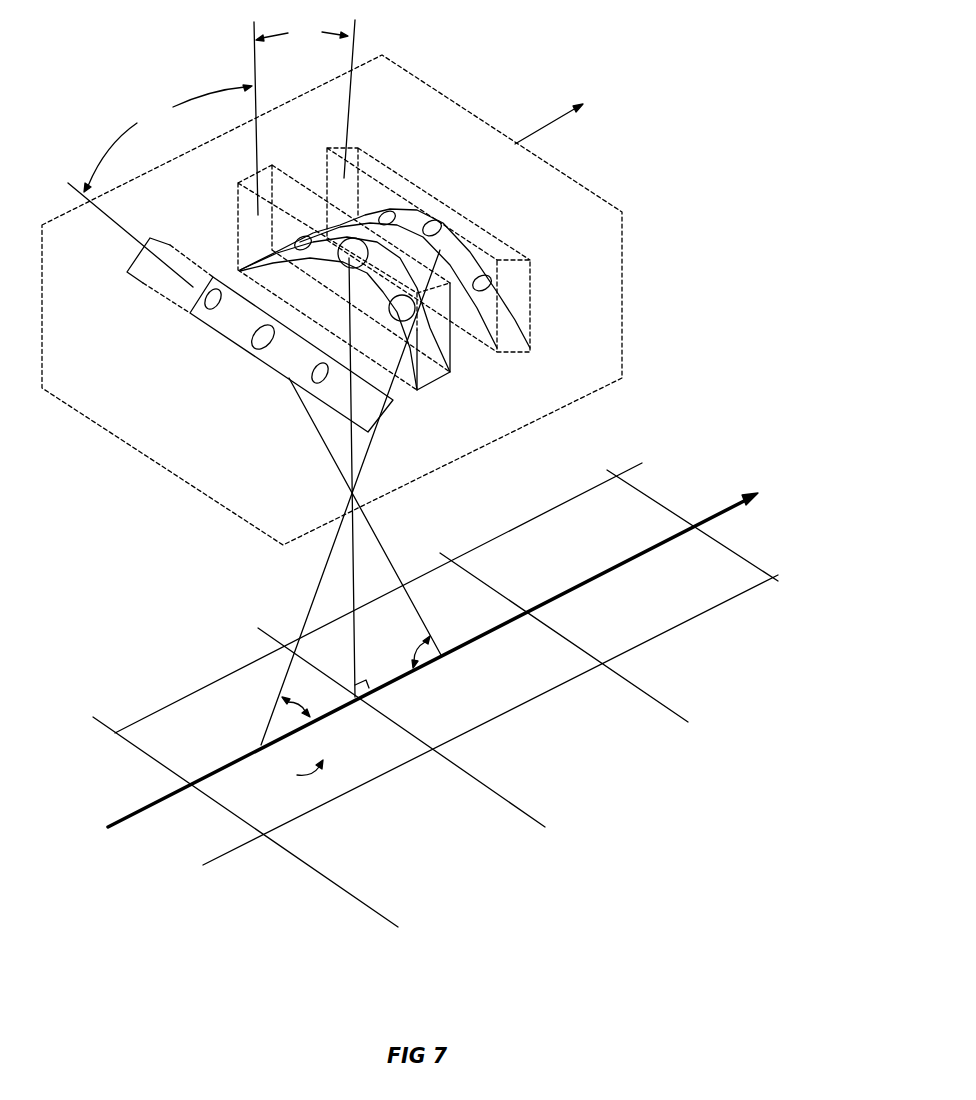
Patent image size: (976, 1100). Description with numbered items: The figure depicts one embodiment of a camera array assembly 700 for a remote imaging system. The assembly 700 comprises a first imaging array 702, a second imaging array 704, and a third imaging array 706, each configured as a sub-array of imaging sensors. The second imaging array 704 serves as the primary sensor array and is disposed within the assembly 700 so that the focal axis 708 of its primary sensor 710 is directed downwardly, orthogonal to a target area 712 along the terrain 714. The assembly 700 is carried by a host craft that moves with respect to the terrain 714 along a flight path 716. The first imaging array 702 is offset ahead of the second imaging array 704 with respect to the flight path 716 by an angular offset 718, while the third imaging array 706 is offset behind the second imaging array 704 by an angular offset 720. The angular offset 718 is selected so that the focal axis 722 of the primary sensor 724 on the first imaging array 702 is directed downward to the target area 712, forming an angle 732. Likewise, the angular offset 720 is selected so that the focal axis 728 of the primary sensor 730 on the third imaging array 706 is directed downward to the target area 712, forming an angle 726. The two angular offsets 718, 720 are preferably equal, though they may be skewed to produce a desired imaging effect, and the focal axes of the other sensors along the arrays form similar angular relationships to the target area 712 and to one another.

The camera array assembly 700 is at (614, 210).
The first imaging array 702 is at (369, 152).
The second imaging array 704 is at (250, 177).
The third imaging array 706 is at (134, 267).
The focal axis 708 is at (347, 460).
The primary sensor 710 is at (344, 264).
The target area 712 is at (292, 774).
The terrain 714 is at (713, 640).
The flight path 716 is at (722, 509).
The angular offset 718 is at (304, 117).
The angular offset 720 is at (168, 138).
The focal axis 722 is at (366, 456).
The primary sensor 724 is at (447, 232).
The angle 726 is at (404, 650).
The focal axis 728 is at (305, 418).
The primary sensor 730 is at (257, 346).
The angle 732 is at (306, 699).